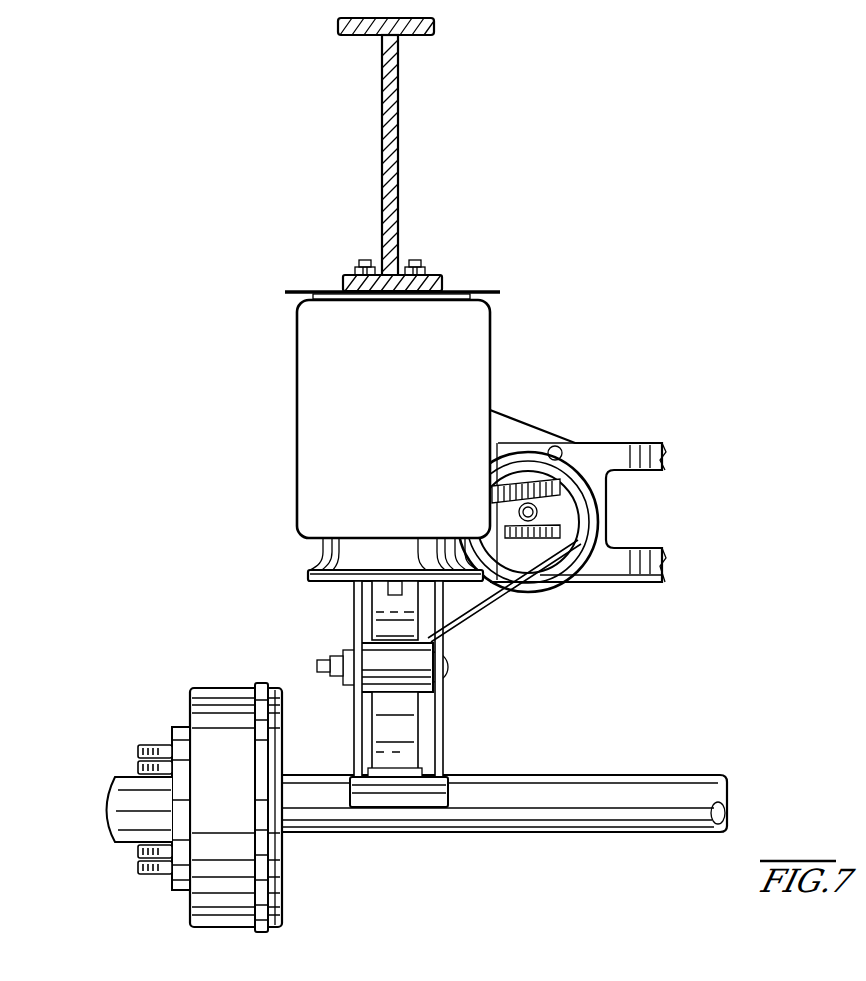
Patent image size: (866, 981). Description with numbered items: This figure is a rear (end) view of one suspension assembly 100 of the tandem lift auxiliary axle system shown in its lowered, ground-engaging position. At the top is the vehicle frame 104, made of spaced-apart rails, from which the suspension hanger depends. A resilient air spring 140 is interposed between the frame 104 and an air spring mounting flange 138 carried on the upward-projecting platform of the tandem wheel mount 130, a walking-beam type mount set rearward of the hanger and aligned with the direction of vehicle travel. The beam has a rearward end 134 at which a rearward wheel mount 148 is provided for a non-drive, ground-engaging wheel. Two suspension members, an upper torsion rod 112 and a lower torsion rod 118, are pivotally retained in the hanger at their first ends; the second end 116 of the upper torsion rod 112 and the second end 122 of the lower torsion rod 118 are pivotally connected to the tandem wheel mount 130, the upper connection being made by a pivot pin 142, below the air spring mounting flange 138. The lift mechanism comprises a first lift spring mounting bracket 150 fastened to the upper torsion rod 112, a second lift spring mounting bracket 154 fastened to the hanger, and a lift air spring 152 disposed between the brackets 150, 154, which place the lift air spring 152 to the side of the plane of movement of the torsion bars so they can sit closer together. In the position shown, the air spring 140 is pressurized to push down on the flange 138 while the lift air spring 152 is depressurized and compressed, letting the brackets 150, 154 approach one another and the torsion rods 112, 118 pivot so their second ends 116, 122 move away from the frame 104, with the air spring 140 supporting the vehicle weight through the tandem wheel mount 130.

The suspension assembly 100 is at (485, 253).
The vehicle frame 104 is at (398, 135).
The upper torsion rod 112 is at (380, 607).
The second end of the upper torsion rod 116 is at (385, 632).
The lower torsion rod 118 is at (430, 712).
The second end of the lower torsion rod 122 is at (418, 752).
The tandem wheel mount 130 is at (453, 677).
The rearward end of the tandem wheel beam 134 is at (445, 697).
The air spring mounting flange 138 is at (330, 563).
The air spring 140 is at (308, 528).
The pivot pin 142 is at (340, 660).
The rearward wheel mount 148 is at (290, 712).
The first lift spring mounting bracket 150 is at (467, 590).
The lift air spring 152 is at (546, 594).
The second lift spring mounting bracket 154 is at (515, 432).